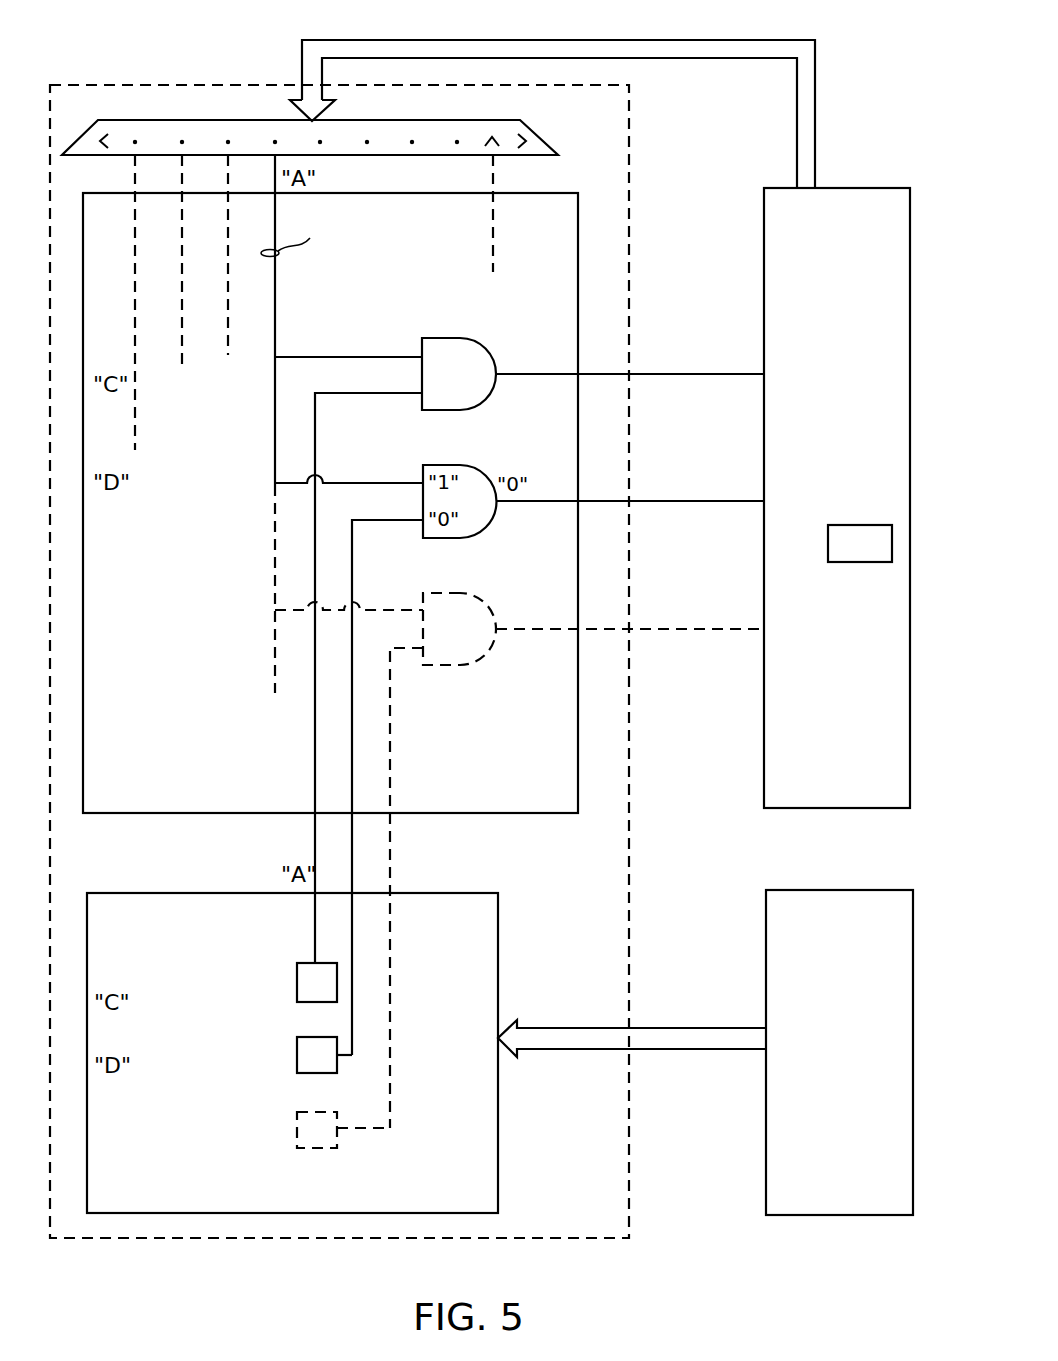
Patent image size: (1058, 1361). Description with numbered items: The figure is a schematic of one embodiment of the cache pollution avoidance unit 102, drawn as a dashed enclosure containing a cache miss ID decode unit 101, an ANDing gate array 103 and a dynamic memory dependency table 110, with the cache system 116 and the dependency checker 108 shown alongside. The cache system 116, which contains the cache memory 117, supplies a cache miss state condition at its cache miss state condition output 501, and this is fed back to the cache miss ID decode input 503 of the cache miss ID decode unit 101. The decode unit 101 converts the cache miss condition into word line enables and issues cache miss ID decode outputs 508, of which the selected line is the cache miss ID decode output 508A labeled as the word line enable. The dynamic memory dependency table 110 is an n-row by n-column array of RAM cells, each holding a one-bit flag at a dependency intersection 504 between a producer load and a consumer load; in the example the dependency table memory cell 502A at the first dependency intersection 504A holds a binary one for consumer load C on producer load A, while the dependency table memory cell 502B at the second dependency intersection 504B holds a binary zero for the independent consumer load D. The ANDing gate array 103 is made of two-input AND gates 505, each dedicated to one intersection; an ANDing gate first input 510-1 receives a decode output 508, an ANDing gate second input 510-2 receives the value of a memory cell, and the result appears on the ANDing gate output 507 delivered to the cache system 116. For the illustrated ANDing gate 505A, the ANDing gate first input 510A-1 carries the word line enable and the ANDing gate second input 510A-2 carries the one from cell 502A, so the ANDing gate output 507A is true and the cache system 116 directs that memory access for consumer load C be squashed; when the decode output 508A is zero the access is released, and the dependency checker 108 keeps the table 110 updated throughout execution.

The cache miss ID decode unit 101 is at (538, 128).
The cache pollution avoidance unit 102 is at (152, 84).
The ANDing gate array 103 is at (540, 814).
The dependency checker 108 is at (880, 889).
The dynamic memory dependency table 110 is at (499, 1165).
The cache system 116 is at (890, 187).
The cache memory 117 is at (840, 563).
The cache miss state condition output 501 is at (818, 186).
The cache miss ID decode input 503 is at (325, 113).
The dependency intersection 504 is at (322, 1149).
The first dependency intersection 504A is at (296, 968).
The second dependency intersection 504B is at (296, 1068).
The dependency table memory cell 502A is at (300, 988).
The dependency table memory cell 502B is at (300, 1044).
The AND gate 505 is at (452, 592).
The ANDing gate 505A is at (458, 337).
The ANDing gate output 507 is at (500, 636).
The ANDing gate output 507A is at (500, 380).
The cache miss ID decode outputs 508 is at (137, 355).
The cache miss ID decode output 508A is at (276, 270).
The ANDing gate first input 510-1 is at (398, 608).
The ANDing gate second input 510-2 is at (400, 652).
The ANDing gate first input 510A-1 is at (295, 356).
The ANDing gate second input 510A-2 is at (322, 398).